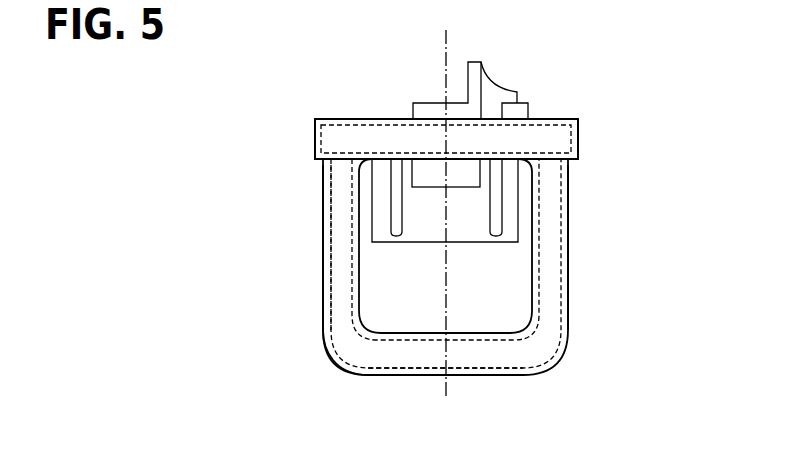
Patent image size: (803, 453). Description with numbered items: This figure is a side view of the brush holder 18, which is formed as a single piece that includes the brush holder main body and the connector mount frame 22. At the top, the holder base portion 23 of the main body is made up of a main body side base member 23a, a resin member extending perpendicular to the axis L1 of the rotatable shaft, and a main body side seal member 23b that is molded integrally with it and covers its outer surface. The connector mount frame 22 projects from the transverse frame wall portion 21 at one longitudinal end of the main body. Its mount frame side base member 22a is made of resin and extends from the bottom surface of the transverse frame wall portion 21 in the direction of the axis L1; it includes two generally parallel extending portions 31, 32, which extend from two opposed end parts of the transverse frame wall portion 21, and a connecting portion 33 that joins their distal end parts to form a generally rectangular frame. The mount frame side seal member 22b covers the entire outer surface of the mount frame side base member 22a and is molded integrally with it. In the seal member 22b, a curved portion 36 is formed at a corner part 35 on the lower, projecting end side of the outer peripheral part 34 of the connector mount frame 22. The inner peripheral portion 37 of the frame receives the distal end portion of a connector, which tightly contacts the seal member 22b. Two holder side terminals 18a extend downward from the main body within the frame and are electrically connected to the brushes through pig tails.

The brush holder 18 is at (621, 101).
The holder side terminal 18a is at (397, 236).
The transverse frame wall portion 21 is at (558, 119).
The connector mount frame 22 is at (508, 267).
The mount frame side base member 22a is at (568, 218).
The mount frame side seal member 22b is at (568, 186).
The holder base portion 23 is at (434, 97).
The main body side base member 23a is at (377, 125).
The main body side seal member 23b is at (328, 119).
The extending portion 31 is at (561, 270).
The extending portion 32 is at (331, 202).
The connecting portion 33 is at (505, 368).
The outer peripheral part 34 is at (323, 260).
The corner part 35 is at (330, 350).
The curved portion 36 is at (323, 337).
The inner peripheral portion 37 is at (359, 300).
The axis L1 is at (448, 43).